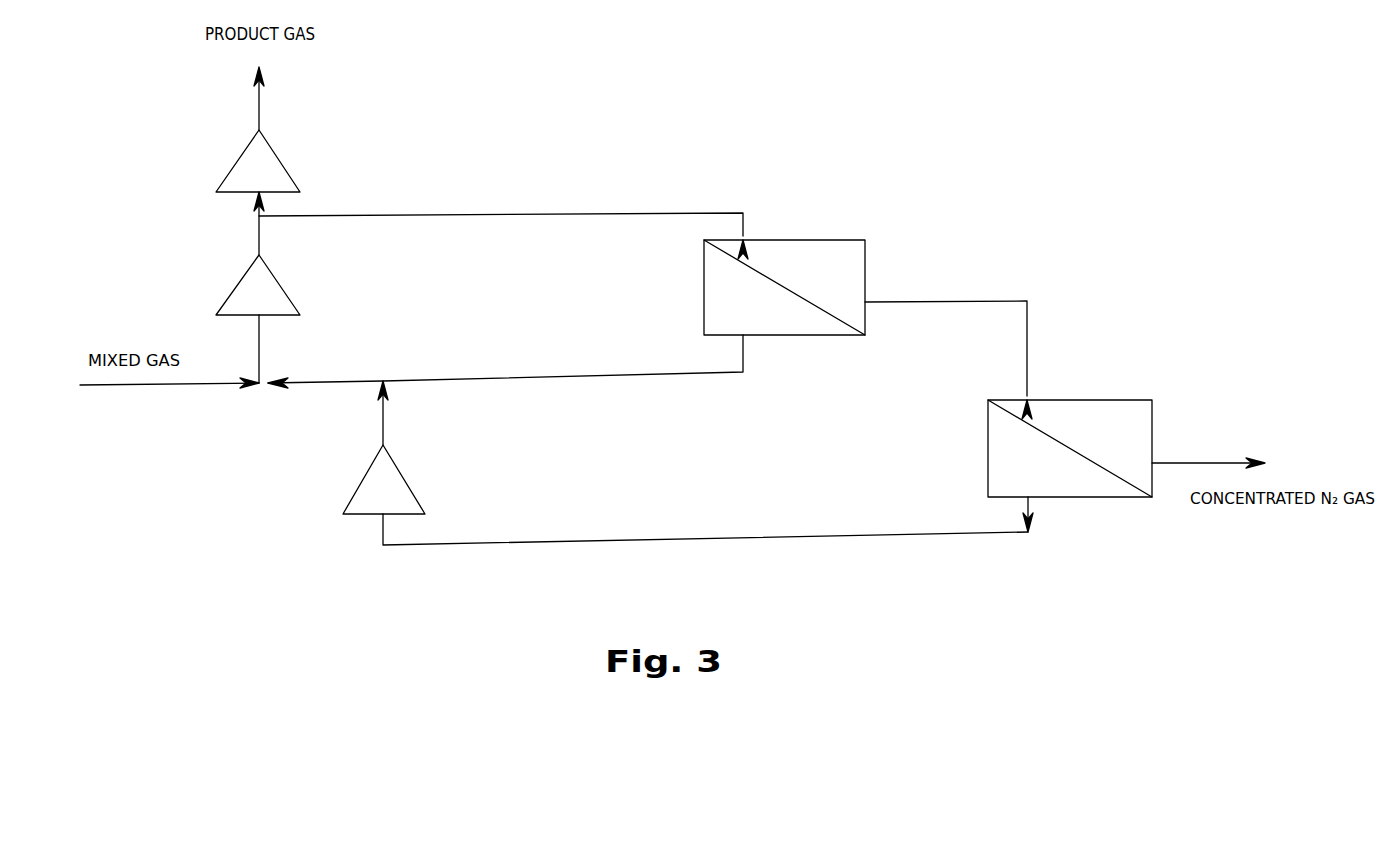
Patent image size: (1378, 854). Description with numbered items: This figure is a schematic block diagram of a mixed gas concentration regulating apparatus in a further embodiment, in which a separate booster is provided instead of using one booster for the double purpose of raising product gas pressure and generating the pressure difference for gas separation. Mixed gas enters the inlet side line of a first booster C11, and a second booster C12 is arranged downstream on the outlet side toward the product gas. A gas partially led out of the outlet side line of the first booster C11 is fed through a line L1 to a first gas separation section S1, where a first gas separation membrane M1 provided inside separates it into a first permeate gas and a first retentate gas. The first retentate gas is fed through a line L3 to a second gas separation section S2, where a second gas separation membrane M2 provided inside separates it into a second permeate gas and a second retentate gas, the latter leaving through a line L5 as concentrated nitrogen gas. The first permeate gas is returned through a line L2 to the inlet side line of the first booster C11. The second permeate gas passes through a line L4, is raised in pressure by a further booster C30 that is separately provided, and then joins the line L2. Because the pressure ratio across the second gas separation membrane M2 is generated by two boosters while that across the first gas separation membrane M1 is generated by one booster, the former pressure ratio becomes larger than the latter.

The first booster C11 is at (234, 288).
The booster C12 is at (234, 165).
The further booster C30 is at (414, 493).
The first gas separation section S1 is at (784, 286).
The second gas separation section S2 is at (1070, 453).
The first gas separation membrane M1 is at (825, 318).
The second gas separation membrane M2 is at (1118, 480).
The line L1 is at (501, 218).
The line L2 is at (411, 351).
The line L3 is at (948, 342).
The line L4 is at (705, 463).
The line L5 is at (1208, 445).